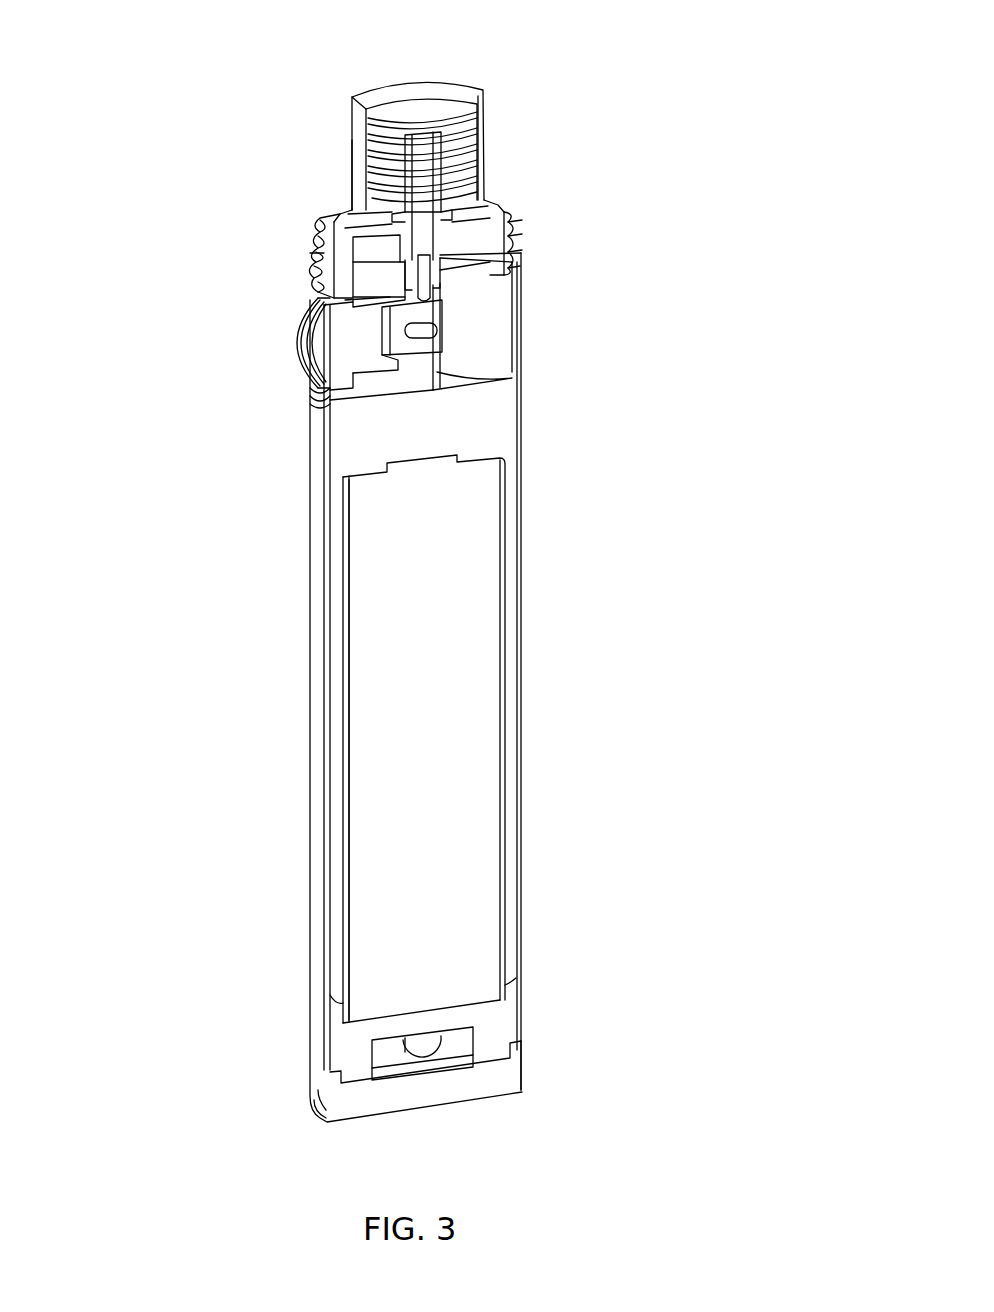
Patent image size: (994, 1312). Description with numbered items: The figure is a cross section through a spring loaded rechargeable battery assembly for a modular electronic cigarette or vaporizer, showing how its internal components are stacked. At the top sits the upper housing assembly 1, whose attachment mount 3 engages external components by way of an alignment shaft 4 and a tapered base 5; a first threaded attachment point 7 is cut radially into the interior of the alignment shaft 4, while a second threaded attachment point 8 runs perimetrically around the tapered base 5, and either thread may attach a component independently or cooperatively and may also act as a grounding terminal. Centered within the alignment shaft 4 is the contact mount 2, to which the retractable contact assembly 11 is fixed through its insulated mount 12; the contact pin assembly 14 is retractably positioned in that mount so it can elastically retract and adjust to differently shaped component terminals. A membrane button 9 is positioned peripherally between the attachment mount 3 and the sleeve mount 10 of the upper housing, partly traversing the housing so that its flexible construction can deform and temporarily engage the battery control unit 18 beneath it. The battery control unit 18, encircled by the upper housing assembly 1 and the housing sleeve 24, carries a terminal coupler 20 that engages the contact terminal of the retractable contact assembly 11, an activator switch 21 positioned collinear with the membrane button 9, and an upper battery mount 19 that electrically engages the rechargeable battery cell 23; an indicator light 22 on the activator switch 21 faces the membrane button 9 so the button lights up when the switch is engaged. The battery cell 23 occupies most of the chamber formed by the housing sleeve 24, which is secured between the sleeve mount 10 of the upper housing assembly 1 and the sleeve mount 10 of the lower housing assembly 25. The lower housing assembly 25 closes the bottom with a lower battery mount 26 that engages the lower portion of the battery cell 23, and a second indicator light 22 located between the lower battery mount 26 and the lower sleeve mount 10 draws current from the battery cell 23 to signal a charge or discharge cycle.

The upper housing assembly 1 is at (275, 237).
The contact mount 2 is at (455, 190).
The attachment mount 3 is at (272, 173).
The alignment shaft 4 is at (352, 142).
The tapered base 5 is at (340, 210).
The first threaded attachment point 7 is at (470, 140).
The second threaded attachment point 8 is at (505, 236).
The membrane button 9 is at (310, 362).
The sleeve mount 10 is at (327, 400).
The retractable contact assembly 11 is at (435, 104).
The insulated mount 12 is at (436, 258).
The contact pin assembly 14 is at (405, 140).
The battery control unit 18 is at (488, 362).
The upper battery mount 19 is at (508, 466).
The terminal coupler 20 is at (410, 300).
The activator switch 21 is at (398, 345).
The indicator light 22 is at (428, 332).
The rechargeable battery cell 23 is at (503, 740).
The housing sleeve 24 is at (310, 782).
The lower housing assembly 25 is at (541, 1044).
The lower battery mount 26 is at (512, 980).